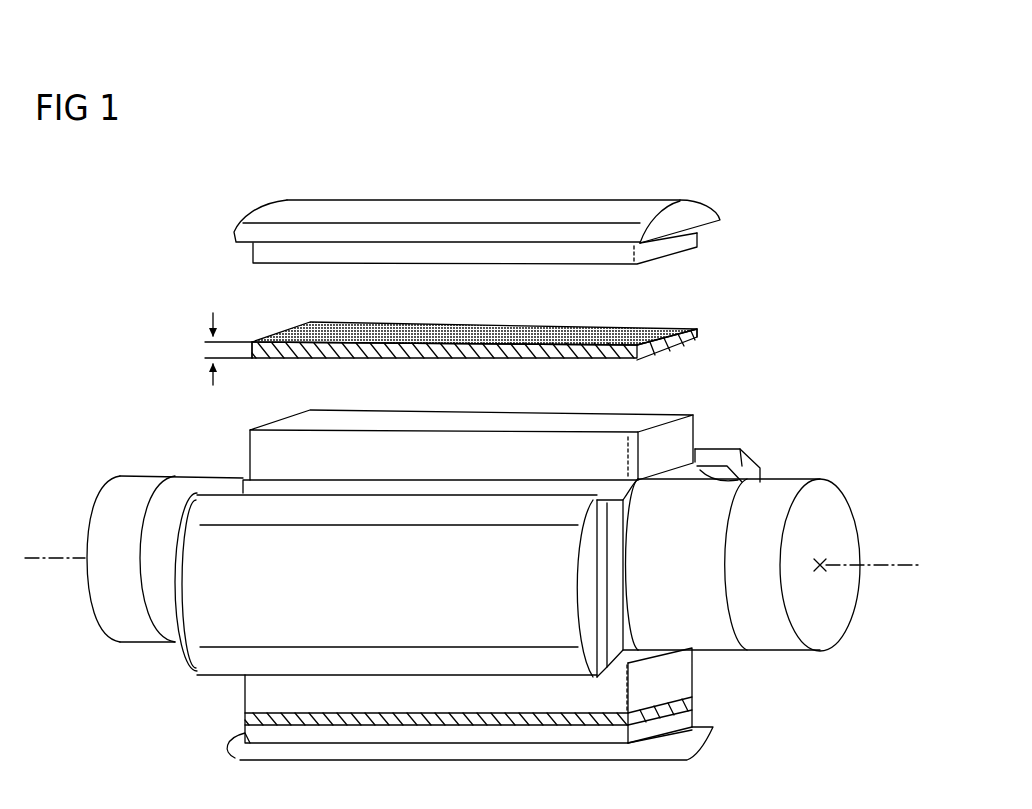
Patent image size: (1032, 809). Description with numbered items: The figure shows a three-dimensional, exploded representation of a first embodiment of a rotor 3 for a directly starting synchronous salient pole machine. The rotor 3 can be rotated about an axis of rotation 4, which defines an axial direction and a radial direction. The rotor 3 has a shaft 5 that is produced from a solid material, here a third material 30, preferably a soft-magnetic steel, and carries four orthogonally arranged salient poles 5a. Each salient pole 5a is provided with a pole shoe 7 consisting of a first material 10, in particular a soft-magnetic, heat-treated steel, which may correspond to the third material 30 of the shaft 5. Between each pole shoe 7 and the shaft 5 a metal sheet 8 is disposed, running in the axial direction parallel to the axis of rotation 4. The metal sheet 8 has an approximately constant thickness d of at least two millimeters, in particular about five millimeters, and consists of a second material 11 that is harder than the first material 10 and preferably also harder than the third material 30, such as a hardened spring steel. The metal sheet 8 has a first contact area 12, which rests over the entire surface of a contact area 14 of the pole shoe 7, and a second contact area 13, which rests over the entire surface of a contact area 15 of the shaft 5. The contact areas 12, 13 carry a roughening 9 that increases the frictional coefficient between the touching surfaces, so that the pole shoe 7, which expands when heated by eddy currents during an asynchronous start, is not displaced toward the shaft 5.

The rotor 3 is at (810, 224).
The axis of rotation 4 is at (868, 560).
The shaft 5 is at (346, 594).
The third material 30 is at (157, 653).
The salient pole 5a is at (262, 450).
The pole shoe 7 is at (483, 460).
The first material 10 is at (531, 211).
The metal sheet 8 is at (540, 528).
The second material 11 is at (700, 333).
The roughening 9 is at (442, 325).
The first contact area 12 is at (642, 328).
The second contact area 13 is at (272, 360).
The contact area of the pole shoe 14 is at (265, 268).
The contact area of the shaft 15 is at (653, 414).
The thickness d is at (205, 350).